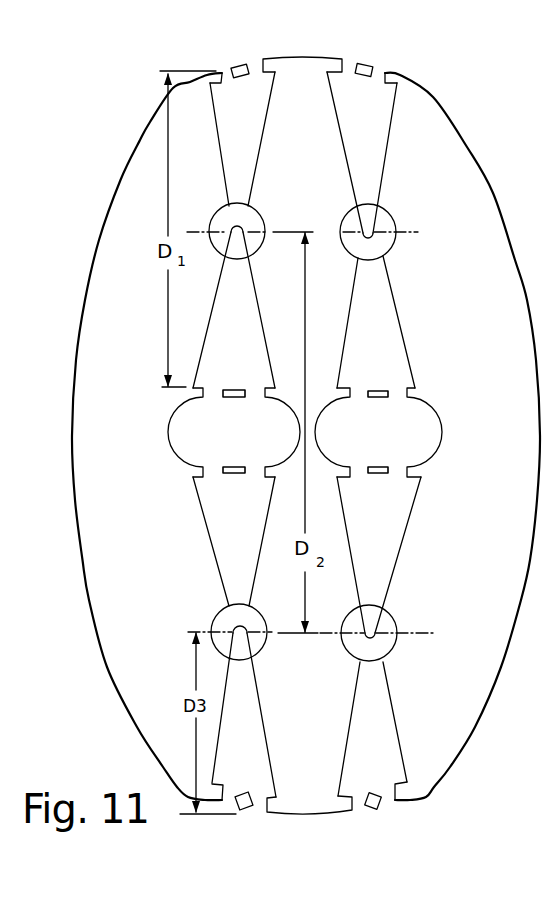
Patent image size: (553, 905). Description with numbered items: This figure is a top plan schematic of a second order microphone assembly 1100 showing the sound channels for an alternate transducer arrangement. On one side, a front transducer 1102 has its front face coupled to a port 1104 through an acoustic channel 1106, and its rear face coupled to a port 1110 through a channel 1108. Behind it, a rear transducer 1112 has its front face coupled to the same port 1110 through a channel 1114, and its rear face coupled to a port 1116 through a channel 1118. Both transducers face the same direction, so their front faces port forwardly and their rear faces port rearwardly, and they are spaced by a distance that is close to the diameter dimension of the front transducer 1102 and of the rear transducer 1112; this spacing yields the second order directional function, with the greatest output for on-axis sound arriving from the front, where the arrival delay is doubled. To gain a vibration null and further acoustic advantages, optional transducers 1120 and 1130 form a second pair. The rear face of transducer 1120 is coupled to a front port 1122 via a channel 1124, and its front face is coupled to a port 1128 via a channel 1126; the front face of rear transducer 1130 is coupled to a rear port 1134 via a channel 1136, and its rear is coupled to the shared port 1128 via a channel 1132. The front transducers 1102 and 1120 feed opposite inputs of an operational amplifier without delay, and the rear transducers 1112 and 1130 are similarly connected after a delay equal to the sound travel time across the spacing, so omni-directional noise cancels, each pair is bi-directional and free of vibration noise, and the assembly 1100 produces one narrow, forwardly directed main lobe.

The microphone assembly 1100 is at (440, 100).
The transducer 1102 is at (387, 224).
The port 1104 is at (377, 73).
The acoustic channel 1106 is at (380, 127).
The channel 1108 is at (396, 313).
The port 1110 is at (433, 422).
The rear transducer 1112 is at (392, 617).
The channel 1114 is at (393, 540).
The port 1116 is at (388, 800).
The channel 1118 is at (380, 697).
The transducer 1120 is at (253, 219).
The front port 1122 is at (225, 72).
The channel 1124 is at (257, 130).
The channel 1126 is at (250, 306).
The port 1128 is at (182, 440).
The rear transducer 1130 is at (213, 621).
The channel 1132 is at (214, 532).
The rear port 1134 is at (257, 807).
The channel 1136 is at (260, 737).